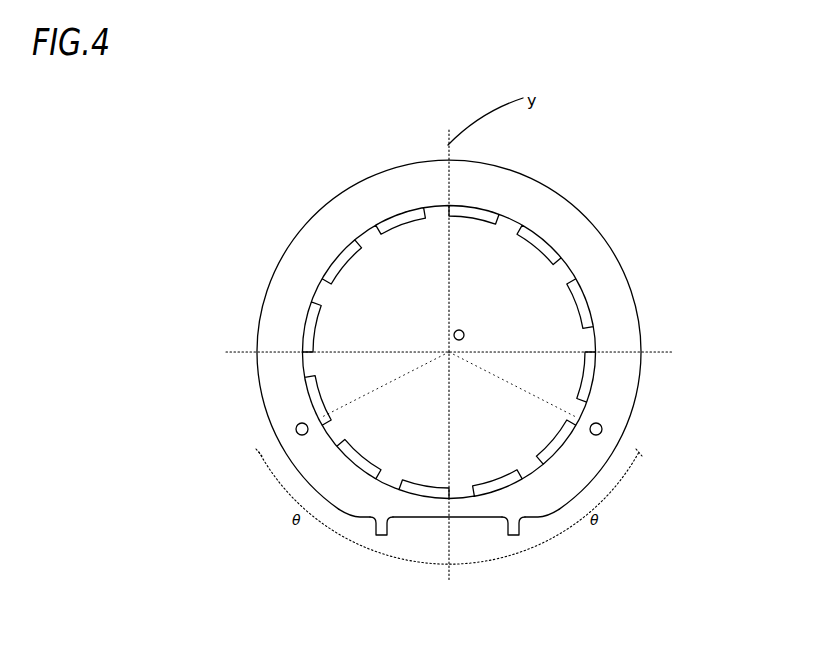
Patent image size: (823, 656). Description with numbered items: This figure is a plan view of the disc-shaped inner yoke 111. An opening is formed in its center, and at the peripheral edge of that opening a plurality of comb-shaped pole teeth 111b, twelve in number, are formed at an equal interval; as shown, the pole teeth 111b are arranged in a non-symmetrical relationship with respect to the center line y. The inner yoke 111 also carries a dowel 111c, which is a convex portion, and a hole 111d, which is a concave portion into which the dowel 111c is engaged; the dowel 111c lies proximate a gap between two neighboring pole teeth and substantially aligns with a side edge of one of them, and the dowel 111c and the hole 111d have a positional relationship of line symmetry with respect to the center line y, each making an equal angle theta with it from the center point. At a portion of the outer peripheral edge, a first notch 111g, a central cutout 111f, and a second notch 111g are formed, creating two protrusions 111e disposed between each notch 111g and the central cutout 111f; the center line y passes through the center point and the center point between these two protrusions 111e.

The inner yoke 111 is at (562, 225).
The pole teeth 111b is at (582, 297).
The dowel 111c is at (295, 425).
The hole 111d is at (600, 423).
The protrusions 111e is at (380, 533).
The central cutout 111f is at (450, 517).
The notch 111g is at (365, 519).